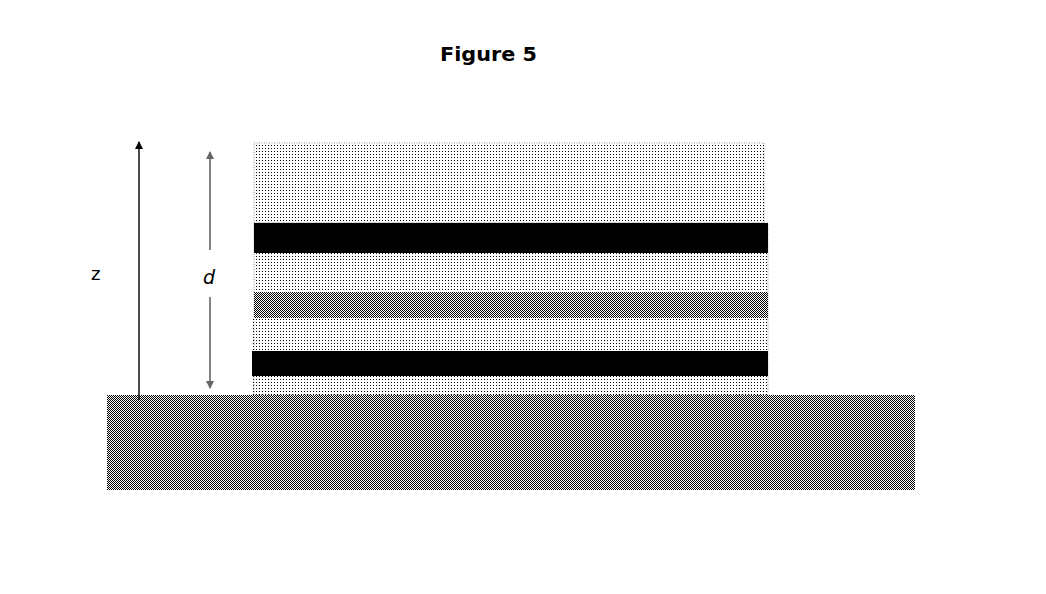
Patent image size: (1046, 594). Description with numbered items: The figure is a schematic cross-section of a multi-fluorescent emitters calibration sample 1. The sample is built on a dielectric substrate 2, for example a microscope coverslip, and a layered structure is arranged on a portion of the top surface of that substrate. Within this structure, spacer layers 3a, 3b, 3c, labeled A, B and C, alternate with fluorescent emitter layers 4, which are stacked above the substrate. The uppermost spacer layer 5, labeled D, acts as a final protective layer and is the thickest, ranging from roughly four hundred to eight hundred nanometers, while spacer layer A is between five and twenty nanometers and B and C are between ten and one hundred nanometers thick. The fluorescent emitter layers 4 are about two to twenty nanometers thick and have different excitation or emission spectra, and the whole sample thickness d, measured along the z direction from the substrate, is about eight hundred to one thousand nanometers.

The multi-fluorescent emitters calibration sample 1 is at (705, 92).
The dielectric substrate 2 is at (143, 443).
The spacer layer A 3a is at (660, 392).
The spacer layer B 3b is at (653, 334).
The spacer layer C 3c is at (745, 275).
The fluorescent emitter layers 4 is at (682, 303).
The spacer layer D 5 is at (710, 175).